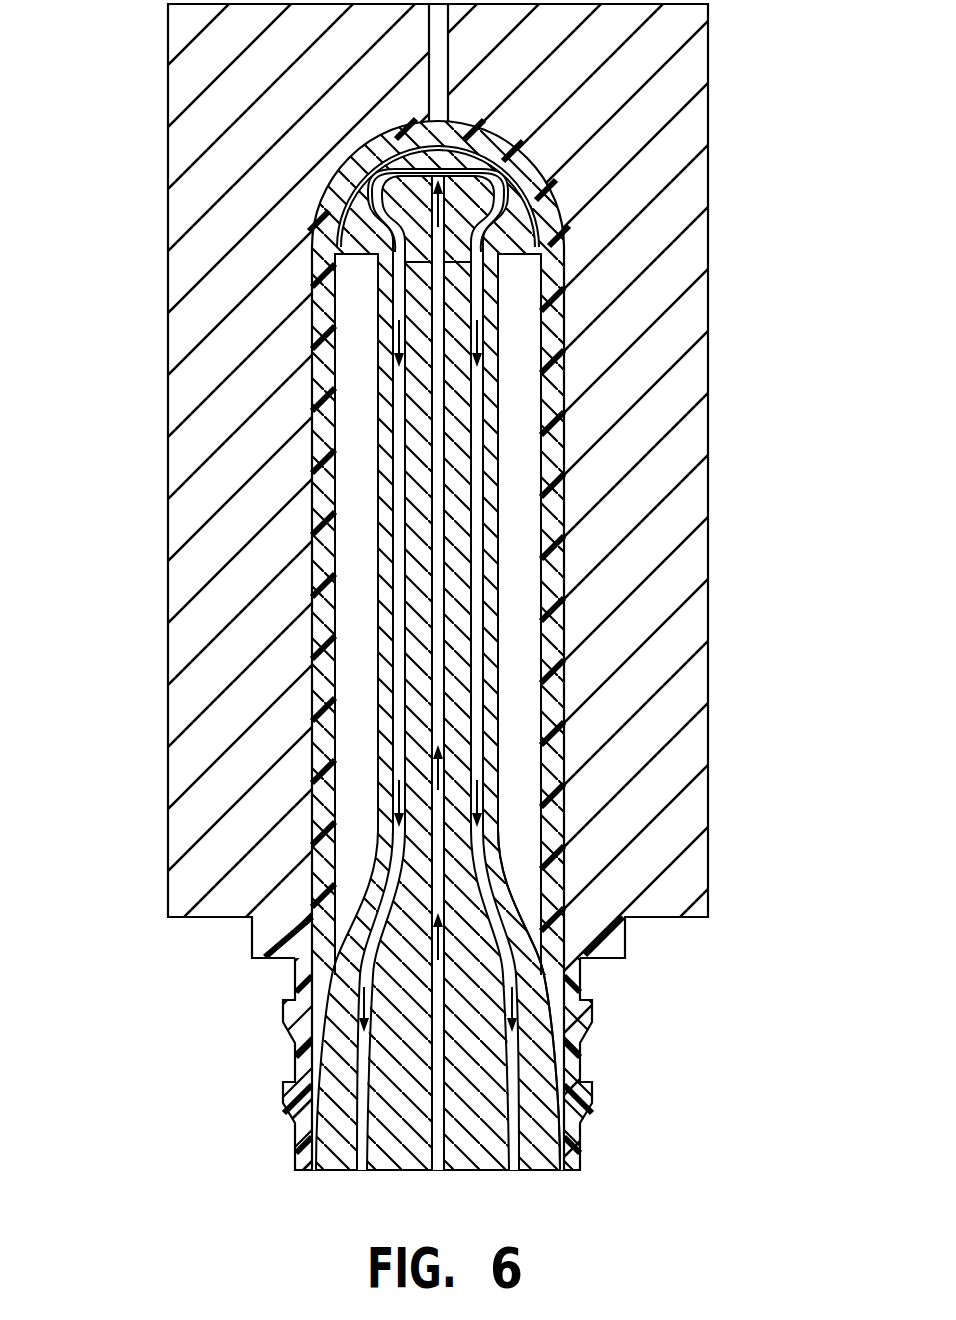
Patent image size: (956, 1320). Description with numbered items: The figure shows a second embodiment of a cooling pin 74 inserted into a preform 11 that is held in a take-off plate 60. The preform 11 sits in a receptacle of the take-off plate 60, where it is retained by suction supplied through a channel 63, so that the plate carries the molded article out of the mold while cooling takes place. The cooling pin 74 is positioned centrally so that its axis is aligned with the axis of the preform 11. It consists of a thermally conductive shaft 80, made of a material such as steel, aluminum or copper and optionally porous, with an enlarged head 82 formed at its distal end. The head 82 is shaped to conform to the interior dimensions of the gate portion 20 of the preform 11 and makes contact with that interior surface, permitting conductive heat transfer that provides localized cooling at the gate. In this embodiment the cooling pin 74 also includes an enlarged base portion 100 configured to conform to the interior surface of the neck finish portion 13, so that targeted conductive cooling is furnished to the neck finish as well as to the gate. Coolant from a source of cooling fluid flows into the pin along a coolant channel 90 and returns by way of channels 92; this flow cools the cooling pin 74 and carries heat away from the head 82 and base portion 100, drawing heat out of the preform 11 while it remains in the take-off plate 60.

The take-off plate 60 is at (688, 124).
The channel 63 is at (445, 62).
The gate portion 20 is at (570, 162).
The enlarged head 82 is at (357, 223).
The coolant channel 90 is at (437, 321).
The return channels 92 is at (478, 450).
The preform 11 is at (556, 656).
The shaft 80 is at (503, 768).
The cooling pin 74 is at (530, 851).
The enlarged base portion 100 is at (537, 995).
The neck finish portion 13 is at (610, 976).